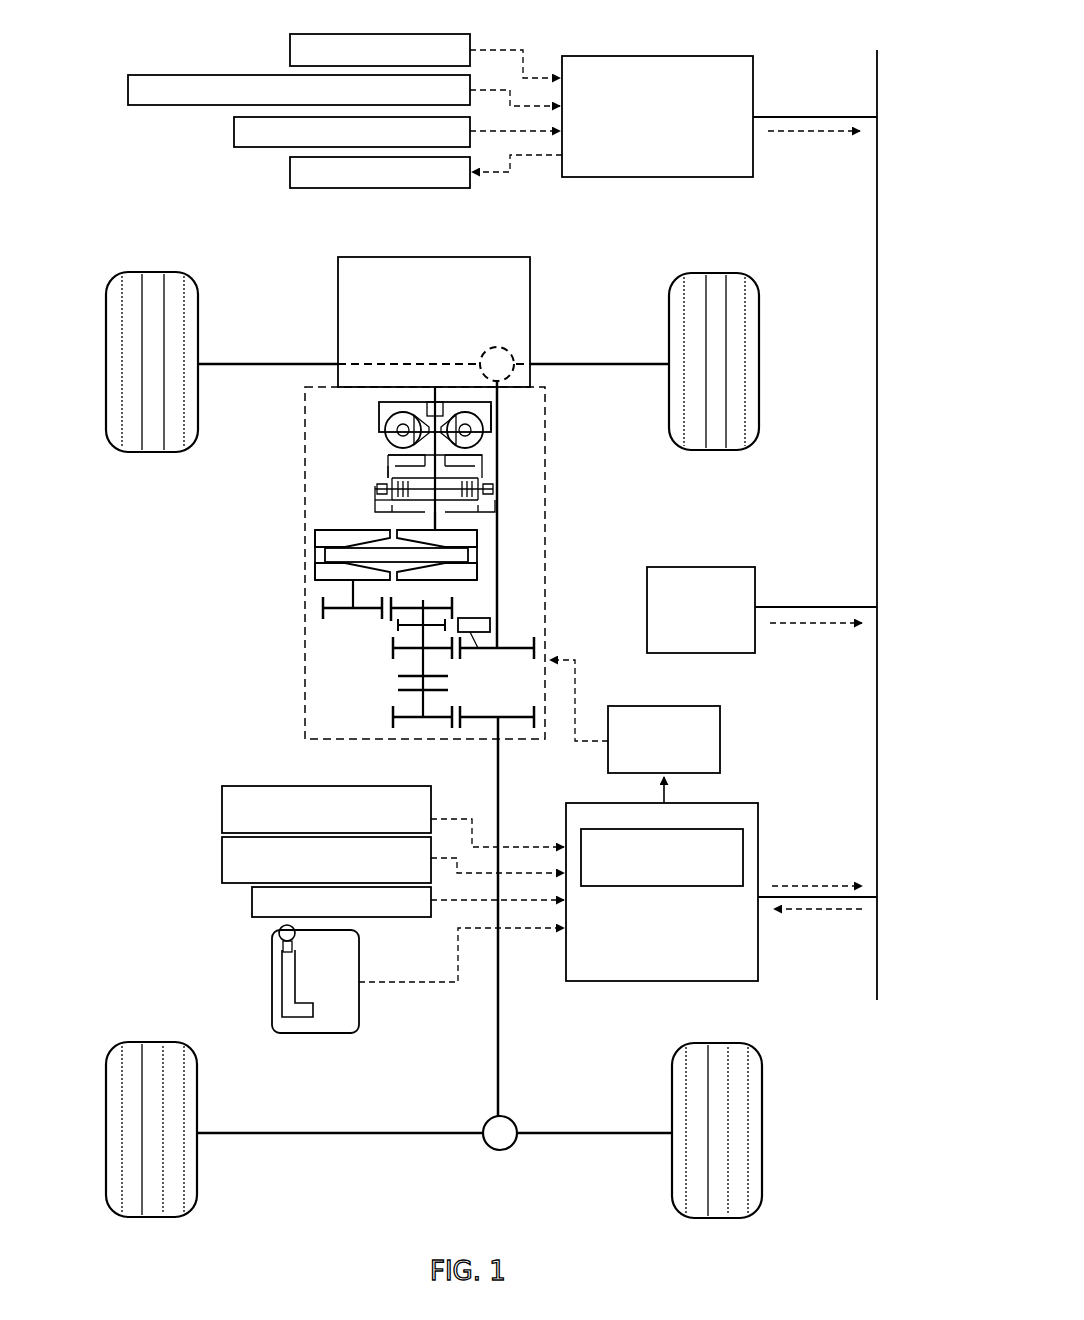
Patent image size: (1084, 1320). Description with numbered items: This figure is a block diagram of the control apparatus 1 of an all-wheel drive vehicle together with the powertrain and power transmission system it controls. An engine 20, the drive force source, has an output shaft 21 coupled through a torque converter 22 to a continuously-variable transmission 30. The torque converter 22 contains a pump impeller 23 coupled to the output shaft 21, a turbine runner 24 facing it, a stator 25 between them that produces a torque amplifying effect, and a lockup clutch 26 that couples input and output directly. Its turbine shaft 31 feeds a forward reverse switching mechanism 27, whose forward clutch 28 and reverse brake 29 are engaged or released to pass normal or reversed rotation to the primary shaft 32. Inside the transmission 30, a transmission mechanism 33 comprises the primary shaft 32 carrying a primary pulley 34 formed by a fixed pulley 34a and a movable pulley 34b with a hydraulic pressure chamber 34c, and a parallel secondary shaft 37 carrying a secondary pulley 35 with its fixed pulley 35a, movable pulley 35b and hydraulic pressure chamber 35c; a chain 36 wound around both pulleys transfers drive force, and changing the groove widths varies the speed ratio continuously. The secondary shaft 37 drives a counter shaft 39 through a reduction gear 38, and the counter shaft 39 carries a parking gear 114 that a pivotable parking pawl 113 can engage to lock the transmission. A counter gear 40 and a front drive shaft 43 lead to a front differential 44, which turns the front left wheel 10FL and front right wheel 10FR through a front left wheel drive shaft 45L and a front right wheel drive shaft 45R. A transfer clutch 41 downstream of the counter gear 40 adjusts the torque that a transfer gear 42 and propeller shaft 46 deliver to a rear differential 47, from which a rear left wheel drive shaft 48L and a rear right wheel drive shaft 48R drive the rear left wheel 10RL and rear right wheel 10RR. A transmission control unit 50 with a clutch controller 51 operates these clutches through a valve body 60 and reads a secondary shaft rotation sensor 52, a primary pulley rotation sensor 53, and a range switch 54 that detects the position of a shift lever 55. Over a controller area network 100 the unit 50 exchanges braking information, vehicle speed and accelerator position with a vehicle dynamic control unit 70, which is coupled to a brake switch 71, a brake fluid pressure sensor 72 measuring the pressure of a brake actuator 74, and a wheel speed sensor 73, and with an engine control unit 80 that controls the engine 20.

The control apparatus 1 is at (833, 750).
The controller area network 100 is at (877, 490).
The front left wheel 10FL is at (153, 272).
The front right wheel 10FR is at (712, 273).
The rear left wheel 10RL is at (148, 1218).
The rear right wheel 10RR is at (712, 1220).
The engine 20 is at (338, 298).
The output shaft 21 is at (374, 436).
The torque converter 22 is at (252, 390).
The pump impeller 23 is at (378, 440).
The turbine runner 24 is at (378, 420).
The stator 25 is at (378, 432).
The lockup clutch 26 is at (487, 413).
The forward reverse switching mechanism 27 is at (368, 488).
The forward clutch 28 is at (378, 471).
The reverse brake 29 is at (372, 502).
The continuously-variable transmission 30 is at (305, 673).
The turbine shaft 31 is at (447, 450).
The primary shaft 32 is at (437, 522).
The transmission mechanism 33 is at (480, 585).
The primary pulley 34 is at (505, 564).
The fixed pulley 34a is at (480, 532).
The movable pulley 34b is at (480, 572).
The hydraulic pressure chamber 34c is at (445, 573).
The secondary pulley 35 is at (280, 549).
The fixed pulley 35a is at (330, 575).
The movable pulley 35b is at (320, 540).
The hydraulic pressure chamber 35c is at (340, 535).
The chain 36 is at (325, 555).
The secondary shaft 37 is at (350, 593).
The reduction gear 38 is at (317, 618).
The counter shaft 39 is at (405, 628).
The counter gear 40 is at (387, 657).
The transfer clutch 41 is at (393, 682).
The transfer gear 42 is at (387, 718).
The front drive shaft 43 is at (500, 408).
The front differential 44 is at (490, 347).
The front left wheel drive shaft 45L is at (302, 364).
The front right wheel drive shaft 45R is at (557, 364).
The propeller shaft 46 is at (495, 1052).
The rear differential 47 is at (484, 1120).
The rear left wheel drive shaft 48L is at (360, 1133).
The rear right wheel drive shaft 48R is at (565, 1133).
The transmission control unit 50 is at (758, 946).
The clutch controller 51 is at (743, 848).
The secondary shaft rotation sensor 52 is at (222, 812).
The primary pulley rotation sensor 53 is at (222, 862).
The range switch 54 is at (252, 903).
The shift lever 55 is at (278, 940).
The valve body 60 is at (720, 735).
The vehicle dynamic control unit 70 is at (753, 83).
The brake switch 71 is at (290, 50).
The brake fluid pressure sensor 72 is at (128, 90).
The wheel speed sensor 73 is at (234, 131).
The brake actuator 74 is at (290, 172).
The engine control unit 80 is at (755, 583).
The parking pawl 113 is at (480, 650).
The parking gear 114 is at (425, 622).